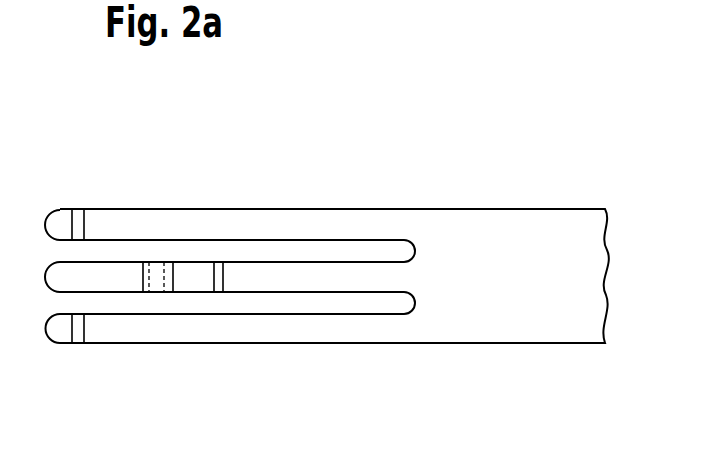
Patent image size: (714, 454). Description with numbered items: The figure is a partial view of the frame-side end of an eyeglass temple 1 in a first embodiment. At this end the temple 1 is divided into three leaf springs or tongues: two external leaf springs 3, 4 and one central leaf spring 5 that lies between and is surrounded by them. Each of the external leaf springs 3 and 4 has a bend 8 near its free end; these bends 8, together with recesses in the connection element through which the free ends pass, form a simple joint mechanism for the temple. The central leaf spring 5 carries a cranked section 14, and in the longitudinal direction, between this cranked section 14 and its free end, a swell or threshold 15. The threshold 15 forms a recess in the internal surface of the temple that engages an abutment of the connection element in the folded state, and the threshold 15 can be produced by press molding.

The eyeglass temple 1 is at (540, 230).
The external leaf spring 3 is at (288, 223).
The external leaf spring 4 is at (317, 330).
The central leaf spring 5 is at (262, 280).
The bend 8 is at (75, 210).
The cranked section 14 is at (218, 277).
The threshold 15 is at (158, 262).